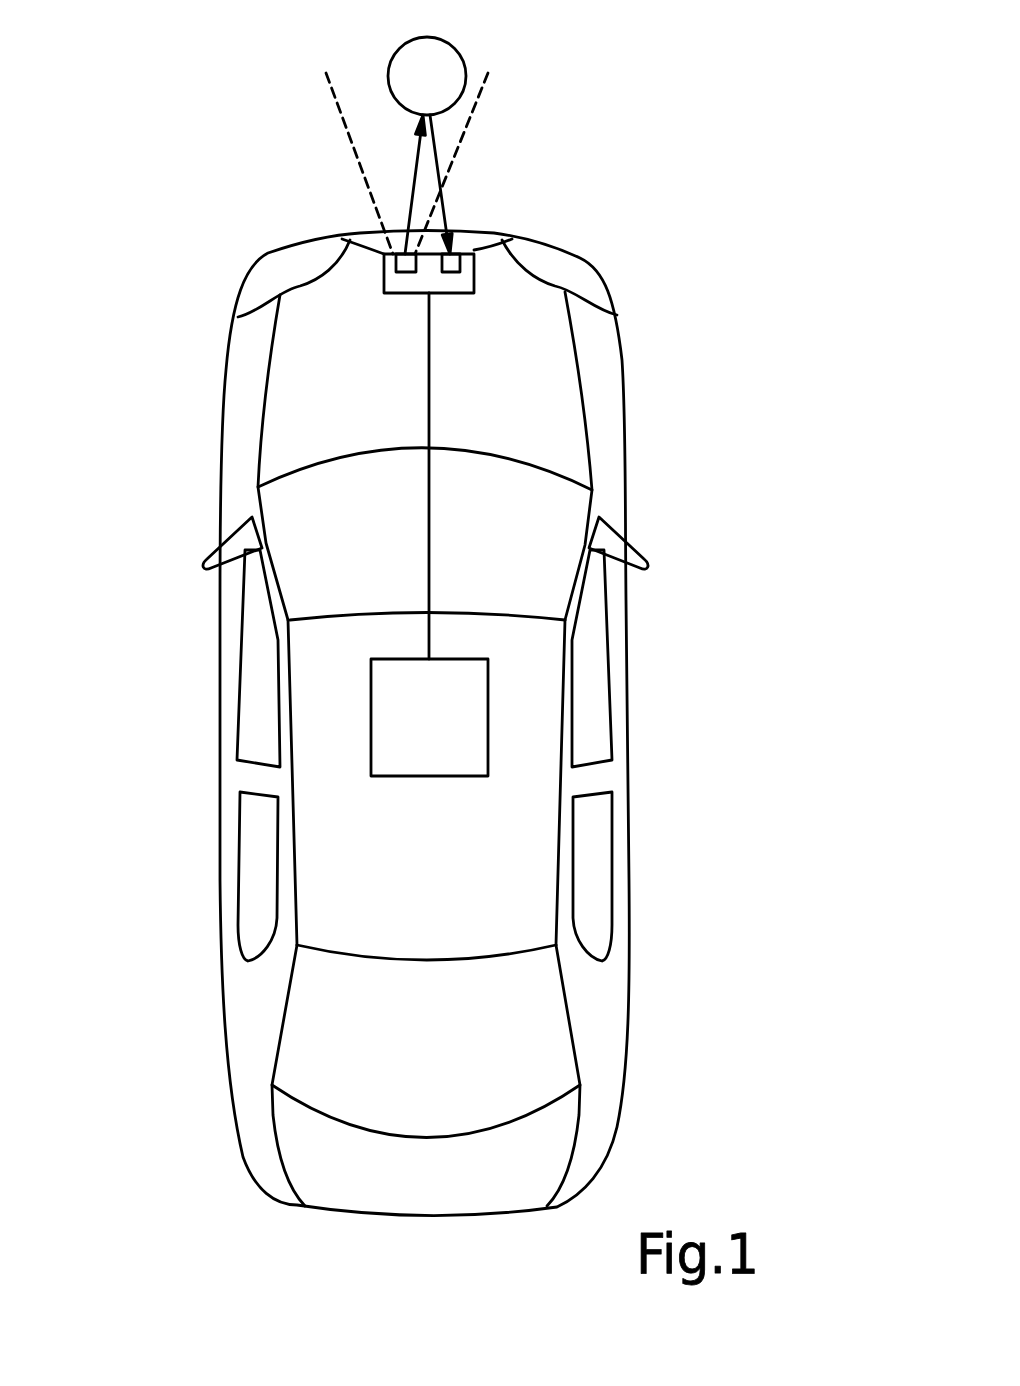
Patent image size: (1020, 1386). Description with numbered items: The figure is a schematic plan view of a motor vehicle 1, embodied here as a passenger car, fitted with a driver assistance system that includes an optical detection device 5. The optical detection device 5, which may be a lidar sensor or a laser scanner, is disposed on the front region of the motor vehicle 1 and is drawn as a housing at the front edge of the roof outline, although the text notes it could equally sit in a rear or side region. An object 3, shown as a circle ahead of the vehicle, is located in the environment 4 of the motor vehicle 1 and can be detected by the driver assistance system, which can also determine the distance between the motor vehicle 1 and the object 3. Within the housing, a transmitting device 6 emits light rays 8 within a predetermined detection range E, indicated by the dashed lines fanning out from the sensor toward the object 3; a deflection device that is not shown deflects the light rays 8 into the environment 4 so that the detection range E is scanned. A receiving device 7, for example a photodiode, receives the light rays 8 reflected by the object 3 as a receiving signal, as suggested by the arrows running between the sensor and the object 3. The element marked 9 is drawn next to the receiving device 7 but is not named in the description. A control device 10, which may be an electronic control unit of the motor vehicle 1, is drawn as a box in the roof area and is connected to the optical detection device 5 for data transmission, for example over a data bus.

The motor vehicle 1 is at (196, 193).
The object 3 is at (465, 60).
The environment 4 is at (188, 790).
The optical detection device 5 is at (476, 278).
The transmitting device 6 is at (345, 242).
The receiving device 7 is at (513, 247).
The light rays 8 is at (410, 210).
The receiver 9 is at (450, 210).
The control device 10 is at (475, 720).
The detection range E is at (338, 112).